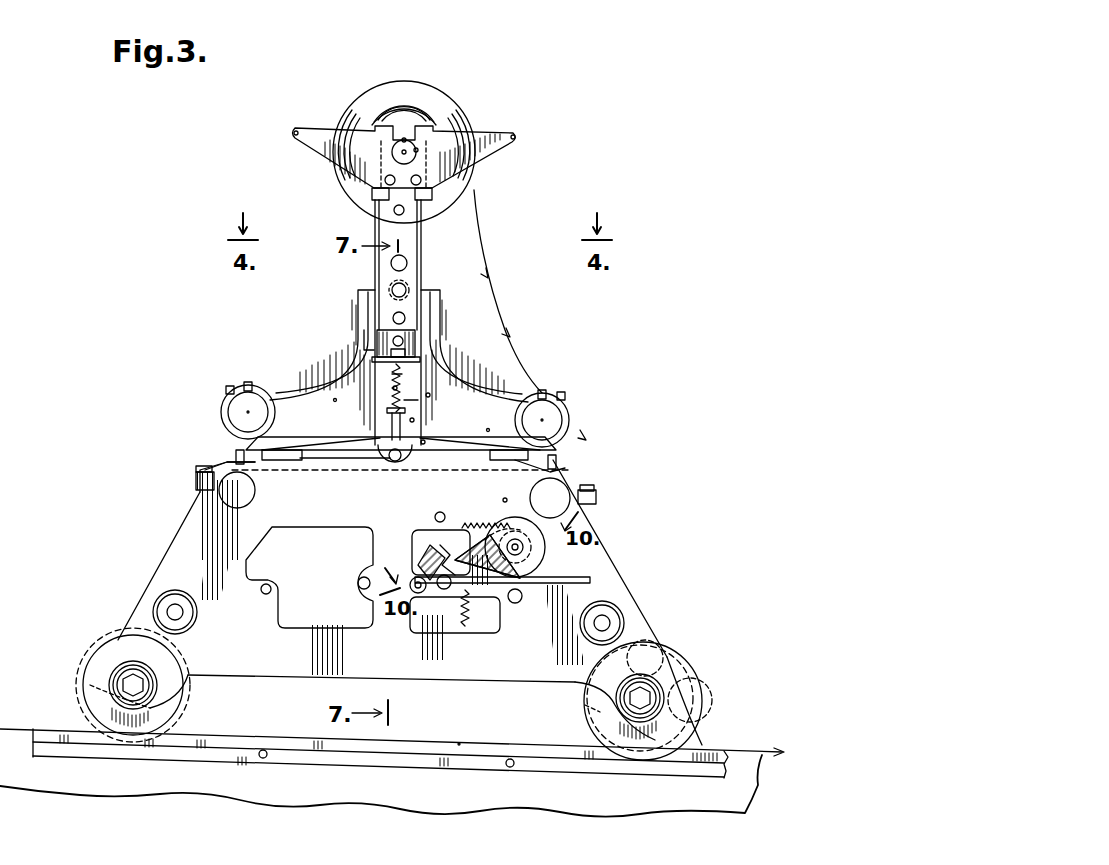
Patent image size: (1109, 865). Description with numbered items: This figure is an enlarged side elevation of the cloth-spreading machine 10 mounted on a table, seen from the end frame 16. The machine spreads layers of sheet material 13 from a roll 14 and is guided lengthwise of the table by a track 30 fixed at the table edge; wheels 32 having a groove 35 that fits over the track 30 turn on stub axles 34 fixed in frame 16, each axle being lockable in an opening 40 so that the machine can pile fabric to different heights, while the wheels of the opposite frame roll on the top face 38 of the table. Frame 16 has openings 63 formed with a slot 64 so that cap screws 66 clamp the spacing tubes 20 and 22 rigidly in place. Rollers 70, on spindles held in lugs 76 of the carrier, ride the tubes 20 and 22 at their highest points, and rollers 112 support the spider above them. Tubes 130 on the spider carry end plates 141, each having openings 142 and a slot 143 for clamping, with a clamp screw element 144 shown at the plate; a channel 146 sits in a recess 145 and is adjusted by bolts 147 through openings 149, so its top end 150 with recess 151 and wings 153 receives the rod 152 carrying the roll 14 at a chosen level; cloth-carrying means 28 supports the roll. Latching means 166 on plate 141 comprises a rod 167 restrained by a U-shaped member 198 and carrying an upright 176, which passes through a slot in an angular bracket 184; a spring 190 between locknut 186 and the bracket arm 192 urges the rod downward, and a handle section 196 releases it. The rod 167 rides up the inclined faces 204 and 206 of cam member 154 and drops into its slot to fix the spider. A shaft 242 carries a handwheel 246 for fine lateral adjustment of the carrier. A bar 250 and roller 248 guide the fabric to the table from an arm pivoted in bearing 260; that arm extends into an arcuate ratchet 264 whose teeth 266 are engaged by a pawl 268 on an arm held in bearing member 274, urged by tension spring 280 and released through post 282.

The machine 10 is at (157, 560).
The sheet material 13 is at (515, 340).
The roll 14 is at (470, 102).
The end frame 16 is at (528, 668).
The tube 20 is at (568, 496).
The tube 22 is at (240, 495).
The cloth-carrying means 28 is at (341, 115).
The track 30 is at (572, 765).
The wheel 32 is at (102, 645).
The stub axle 34 is at (143, 678).
The groove 35 is at (188, 690).
The top face 38 is at (470, 752).
The opening 40 is at (180, 612).
The opening 63 is at (230, 463).
The slot 64 is at (200, 490).
The cap screw 66 is at (200, 468).
The roller 70 is at (240, 452).
The lug 76 is at (270, 460).
The roller 112 is at (406, 413).
The tube 130 is at (255, 402).
The end plate 141 is at (472, 382).
The opening 142 is at (240, 410).
The slot 143 is at (250, 383).
The clamp screw 144 is at (226, 390).
The recess 145 is at (425, 405).
The channel 146 is at (418, 240).
The bolt 147 is at (408, 263).
The opening 149 is at (405, 212).
The top end 150 is at (440, 128).
The recess 151 is at (415, 150).
The rod 152 is at (405, 140).
The wing 153 is at (310, 135).
The cam member 154 is at (348, 460).
The latching means 166 is at (388, 389).
The rod 167 is at (393, 462).
The upright 176 is at (390, 418).
The angular bracket 184 is at (378, 332).
The locknut 186 is at (418, 400).
The spring 190 is at (392, 374).
The arm 192 is at (408, 350).
The handle section 196 is at (406, 318).
The U-shaped member 198 is at (412, 425).
The face 204 is at (345, 452).
The face 206 is at (455, 428).
The short shaft 242 is at (502, 520).
The handwheel 246 is at (540, 558).
The roller 248 is at (695, 705).
The bar 250 is at (658, 650).
The bearing 260 is at (517, 603).
The arcuate ratchet 264 is at (478, 525).
The teeth 266 is at (522, 490).
The pawl 268 is at (428, 532).
The bearing member 274 is at (418, 577).
The tension spring 280 is at (465, 615).
The post 282 is at (446, 590).